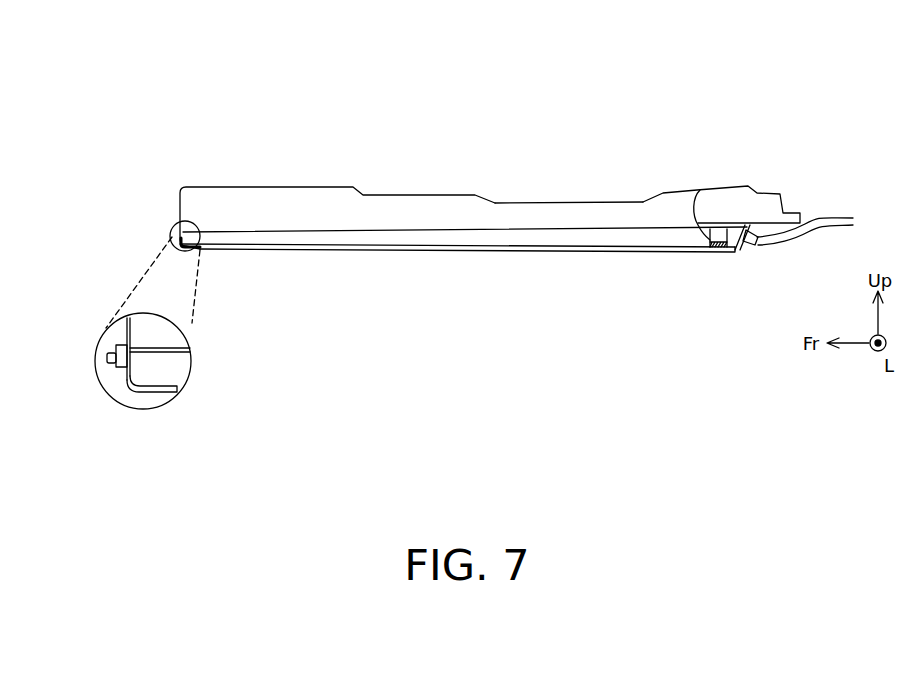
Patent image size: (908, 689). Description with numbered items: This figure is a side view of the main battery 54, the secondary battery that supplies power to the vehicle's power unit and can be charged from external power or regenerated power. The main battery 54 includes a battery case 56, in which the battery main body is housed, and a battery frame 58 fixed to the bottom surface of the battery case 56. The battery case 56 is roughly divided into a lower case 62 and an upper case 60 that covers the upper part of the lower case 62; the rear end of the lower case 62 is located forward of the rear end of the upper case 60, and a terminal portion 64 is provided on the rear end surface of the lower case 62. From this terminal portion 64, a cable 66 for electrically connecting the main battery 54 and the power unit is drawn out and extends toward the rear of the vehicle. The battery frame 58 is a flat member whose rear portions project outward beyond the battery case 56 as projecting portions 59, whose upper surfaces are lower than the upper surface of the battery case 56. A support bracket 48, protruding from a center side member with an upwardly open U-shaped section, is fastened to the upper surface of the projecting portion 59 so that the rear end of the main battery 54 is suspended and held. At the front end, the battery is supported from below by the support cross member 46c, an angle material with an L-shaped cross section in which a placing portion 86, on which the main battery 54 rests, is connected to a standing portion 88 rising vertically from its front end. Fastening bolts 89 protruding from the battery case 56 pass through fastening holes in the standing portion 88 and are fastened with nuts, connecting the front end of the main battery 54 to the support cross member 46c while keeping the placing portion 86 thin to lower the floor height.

The main battery 54 is at (462, 127).
The battery case 56 is at (538, 148).
The upper case 60 is at (547, 210).
The lower case 62 is at (602, 235).
The battery frame 58 is at (527, 254).
The support bracket 48 is at (708, 190).
The projecting portion 59 is at (708, 253).
The terminal portion 64 is at (747, 248).
The cable 66 is at (832, 218).
The support cross member 46c is at (172, 237).
The standing portion 88 is at (116, 373).
The placing portion 86 is at (157, 393).
The fastening bolt 89 is at (108, 351).